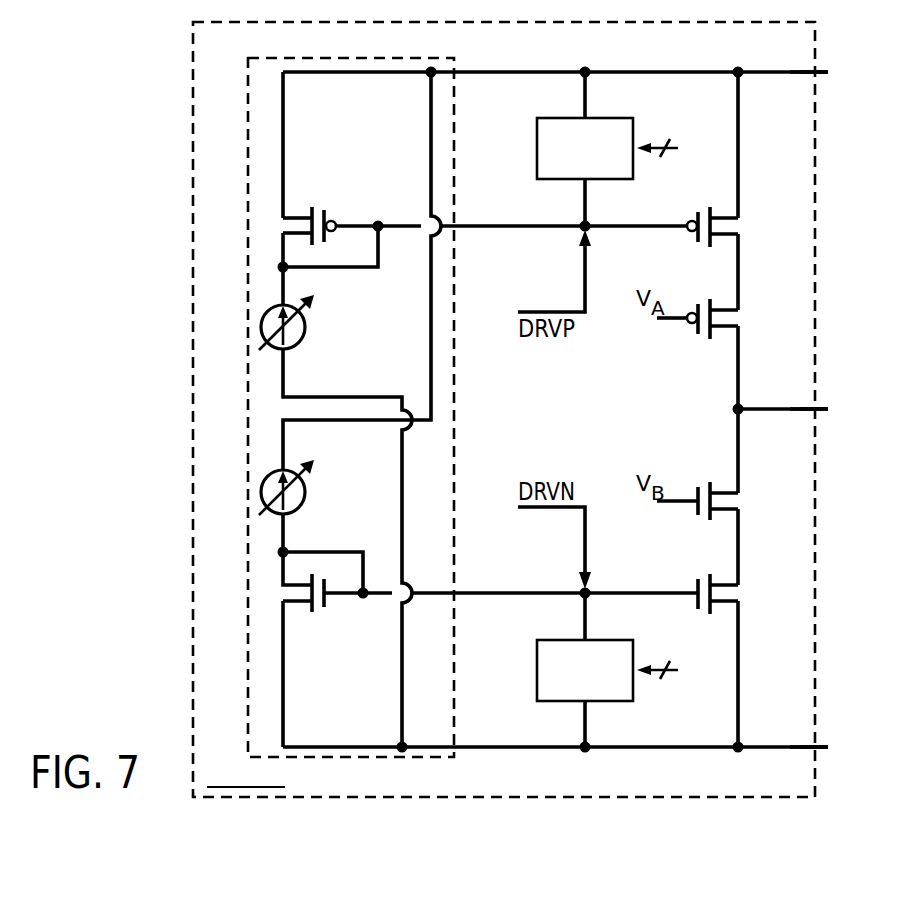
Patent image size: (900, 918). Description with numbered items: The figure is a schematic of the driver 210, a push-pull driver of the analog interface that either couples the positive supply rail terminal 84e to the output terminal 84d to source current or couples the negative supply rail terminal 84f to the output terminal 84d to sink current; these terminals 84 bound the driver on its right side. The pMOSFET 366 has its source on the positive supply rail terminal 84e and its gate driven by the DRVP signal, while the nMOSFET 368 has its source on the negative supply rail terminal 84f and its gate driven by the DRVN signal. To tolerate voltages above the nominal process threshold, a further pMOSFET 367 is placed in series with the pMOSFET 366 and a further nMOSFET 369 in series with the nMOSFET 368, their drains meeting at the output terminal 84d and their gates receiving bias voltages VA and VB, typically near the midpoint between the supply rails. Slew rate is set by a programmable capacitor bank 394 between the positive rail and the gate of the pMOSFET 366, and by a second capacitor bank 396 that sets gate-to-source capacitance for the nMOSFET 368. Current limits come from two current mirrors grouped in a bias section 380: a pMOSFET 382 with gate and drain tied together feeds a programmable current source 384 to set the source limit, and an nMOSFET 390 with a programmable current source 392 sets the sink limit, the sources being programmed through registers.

The driver 210 is at (190, 136).
The bias circuit 380 is at (248, 405).
The pMOSFET 382 is at (292, 216).
The current source 384 is at (300, 343).
The nMOSFET 390 is at (296, 603).
The current source 392 is at (300, 508).
The capacitor bank 394 is at (537, 145).
The capacitor bank 396 is at (537, 672).
The pMOSFET 366 is at (725, 217).
The pMOSFET 367 is at (725, 309).
The nMOSFET 368 is at (725, 585).
The nMOSFET 369 is at (725, 493).
The terminal 84 is at (783, 72).
The positive supply rail terminal 84e is at (800, 72).
The output terminal 84d is at (800, 409).
The negative supply rail terminal 84f is at (800, 747).